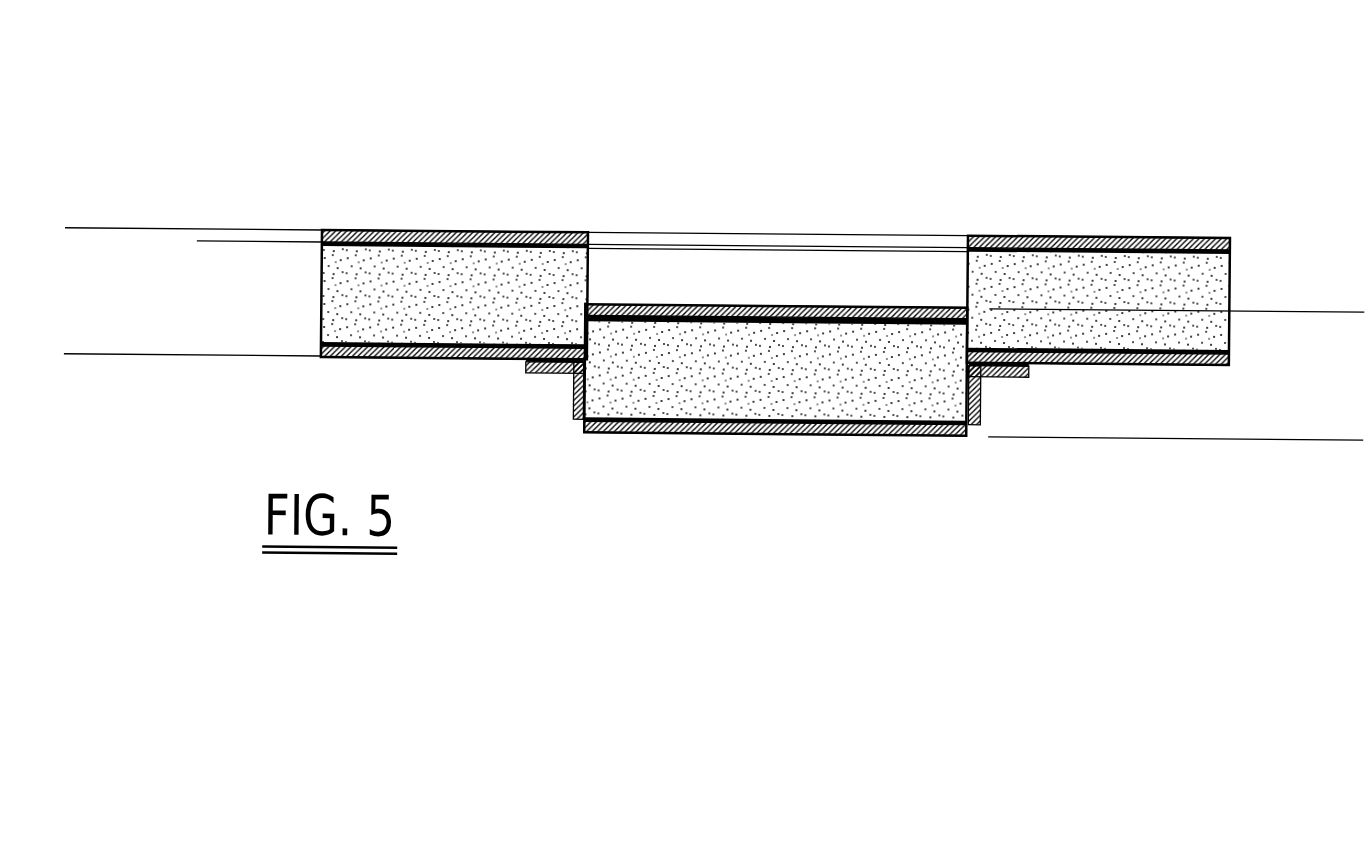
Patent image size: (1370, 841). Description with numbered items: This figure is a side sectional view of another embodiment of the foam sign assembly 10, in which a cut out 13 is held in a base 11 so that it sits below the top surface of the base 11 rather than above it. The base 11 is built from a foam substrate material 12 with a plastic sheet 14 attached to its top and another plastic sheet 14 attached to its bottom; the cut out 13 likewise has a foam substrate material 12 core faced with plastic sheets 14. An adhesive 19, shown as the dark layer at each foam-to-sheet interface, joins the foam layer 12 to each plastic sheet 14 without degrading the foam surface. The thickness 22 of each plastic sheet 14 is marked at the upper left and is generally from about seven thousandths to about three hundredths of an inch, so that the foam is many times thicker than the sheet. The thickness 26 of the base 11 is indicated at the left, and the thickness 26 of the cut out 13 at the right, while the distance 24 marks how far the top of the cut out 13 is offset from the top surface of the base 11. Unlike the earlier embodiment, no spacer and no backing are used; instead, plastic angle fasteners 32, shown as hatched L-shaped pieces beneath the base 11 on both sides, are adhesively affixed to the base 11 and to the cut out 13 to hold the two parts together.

The foam sign system 10 is at (770, 111).
The base 11 is at (257, 308).
The foam substrate material 12 is at (375, 322).
The cut out 13 is at (690, 402).
The plastic sheet 14 is at (403, 229).
The adhesive 19 is at (336, 246).
The thickness of plastic sheet 22 is at (213, 268).
The distance 24 is at (765, 301).
The thickness of cut out 26 is at (78, 230).
The plastic angle fastener 32 is at (574, 409).